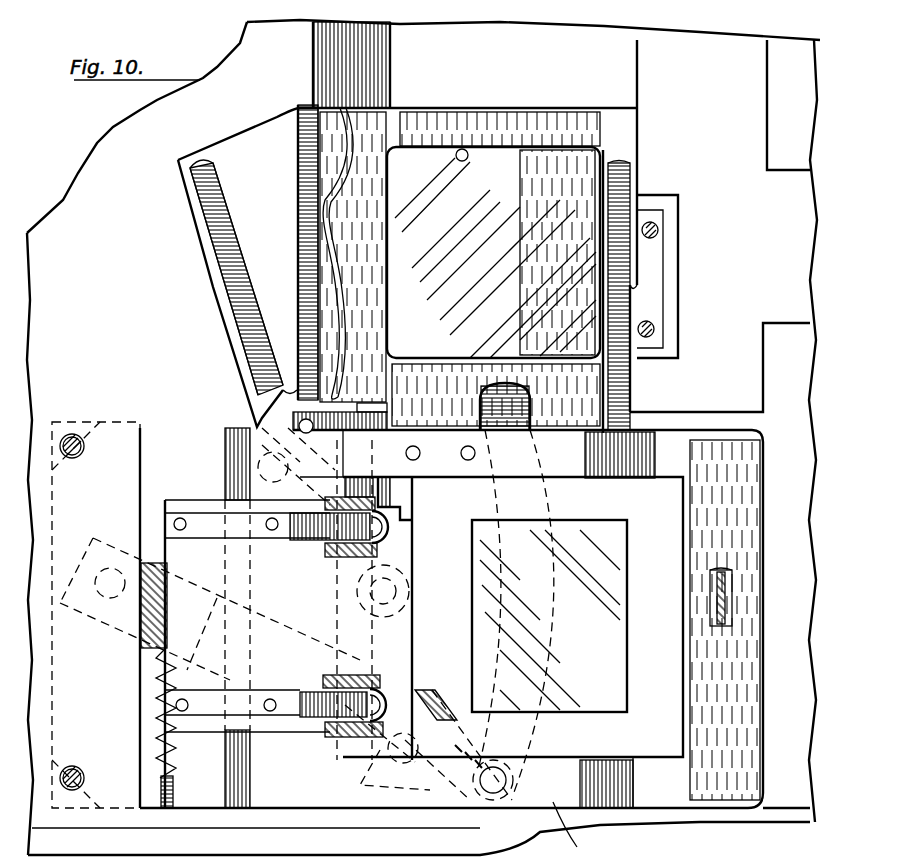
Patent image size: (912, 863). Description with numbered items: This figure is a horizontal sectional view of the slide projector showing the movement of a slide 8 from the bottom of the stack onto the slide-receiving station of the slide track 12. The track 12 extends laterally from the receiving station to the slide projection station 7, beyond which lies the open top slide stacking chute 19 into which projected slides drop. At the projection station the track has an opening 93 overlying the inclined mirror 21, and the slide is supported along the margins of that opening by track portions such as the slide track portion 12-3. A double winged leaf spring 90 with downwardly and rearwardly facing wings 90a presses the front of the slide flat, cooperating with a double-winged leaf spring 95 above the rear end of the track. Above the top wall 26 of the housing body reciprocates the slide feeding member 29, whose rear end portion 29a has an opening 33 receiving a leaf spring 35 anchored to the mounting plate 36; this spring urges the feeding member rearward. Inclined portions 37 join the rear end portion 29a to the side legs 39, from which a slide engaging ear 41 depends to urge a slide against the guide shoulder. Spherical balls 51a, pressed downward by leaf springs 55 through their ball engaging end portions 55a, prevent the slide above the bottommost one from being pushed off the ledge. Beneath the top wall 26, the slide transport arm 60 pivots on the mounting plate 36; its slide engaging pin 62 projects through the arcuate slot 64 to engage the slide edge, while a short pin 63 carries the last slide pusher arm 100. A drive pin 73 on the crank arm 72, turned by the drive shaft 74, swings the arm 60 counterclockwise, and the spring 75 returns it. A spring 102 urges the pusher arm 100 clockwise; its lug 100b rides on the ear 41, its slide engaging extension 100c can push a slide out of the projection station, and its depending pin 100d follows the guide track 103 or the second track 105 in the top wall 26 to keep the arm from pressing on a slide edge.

The slide projection station 7 is at (352, 241).
The slide 8 is at (670, 511).
The slide track 12 is at (538, 122).
The slide track portion 12-3 is at (453, 368).
The slide stacking chute 19 is at (298, 94).
The mirror 21 is at (512, 294).
The top wall 26 is at (98, 162).
The slide feeding member 29 is at (701, 432).
The rear end portion 29a is at (752, 513).
The opening 33 is at (710, 612).
The leaf spring 35 is at (730, 592).
The mounting plate 36 is at (97, 445).
The inclined portion 37 is at (598, 478).
The side leg 39 is at (565, 443).
The slide engaging ear 41 is at (392, 489).
The spherical ball 51a is at (386, 528).
The leaf spring 55 is at (297, 528).
The ball engaging end portion 55a is at (366, 495).
The slide transport arm 60 is at (150, 556).
The slide engaging pin 62 is at (514, 782).
The pin 63 is at (405, 760).
The arcuate slot 64 is at (499, 385).
The crank arm 72 is at (406, 570).
The drive pin 73 is at (228, 460).
The drive shaft 74 is at (398, 595).
The spring 75 is at (158, 732).
The double winged leaf spring 90 is at (338, 289).
The wing 90a is at (352, 358).
The opening 93 is at (462, 149).
The double-winged leaf spring 95 is at (620, 190).
The last slide pusher arm 100 is at (342, 598).
The lug 100b is at (402, 505).
The slide engaging extension 100c is at (376, 404).
The depending pin 100d is at (250, 410).
The spring 102 is at (420, 694).
The guide track 103 is at (225, 250).
The second track 105 is at (298, 175).